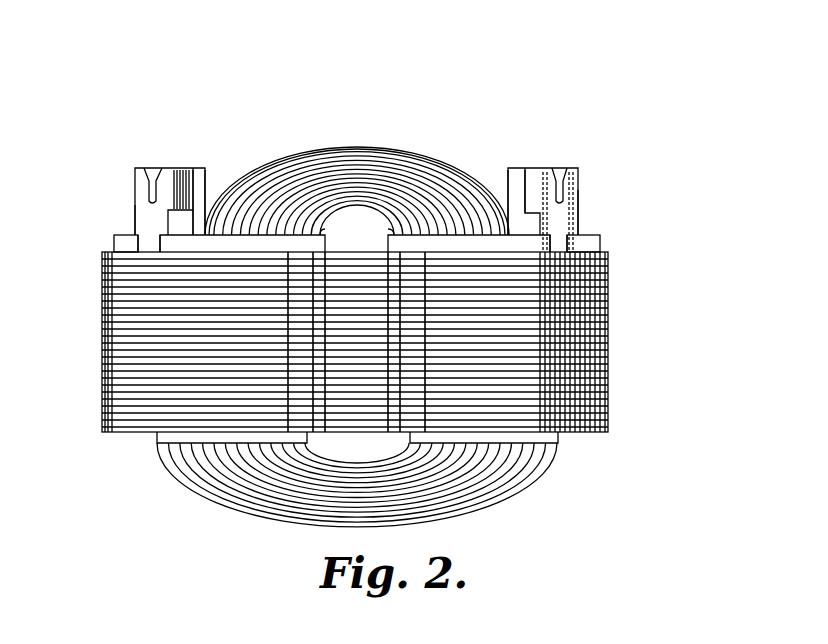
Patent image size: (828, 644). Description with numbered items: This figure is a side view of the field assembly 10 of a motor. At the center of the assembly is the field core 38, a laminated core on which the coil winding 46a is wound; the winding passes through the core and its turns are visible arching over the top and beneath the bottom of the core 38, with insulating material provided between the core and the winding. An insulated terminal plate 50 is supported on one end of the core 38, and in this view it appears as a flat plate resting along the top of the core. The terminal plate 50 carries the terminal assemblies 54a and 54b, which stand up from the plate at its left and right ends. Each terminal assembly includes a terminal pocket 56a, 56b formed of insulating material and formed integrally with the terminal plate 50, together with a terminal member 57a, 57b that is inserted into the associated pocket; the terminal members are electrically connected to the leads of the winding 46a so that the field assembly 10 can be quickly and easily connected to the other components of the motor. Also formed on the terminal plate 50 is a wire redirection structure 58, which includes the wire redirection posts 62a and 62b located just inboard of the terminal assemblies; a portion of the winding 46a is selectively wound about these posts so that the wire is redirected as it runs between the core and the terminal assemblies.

The field assembly 10 is at (190, 76).
The field core 38 is at (610, 315).
The coil winding 46a is at (373, 147).
The terminal plate 50 is at (595, 233).
The terminal assembly 54a is at (119, 185).
The terminal assembly 54b is at (593, 183).
The terminal pocket 56a is at (138, 215).
The terminal pocket 56b is at (576, 199).
The terminal member 57a is at (153, 168).
The terminal member 57b is at (570, 173).
The wire redirection structure 58 is at (221, 169).
The wire redirection post 62a is at (186, 176).
The wire redirection post 62b is at (513, 167).